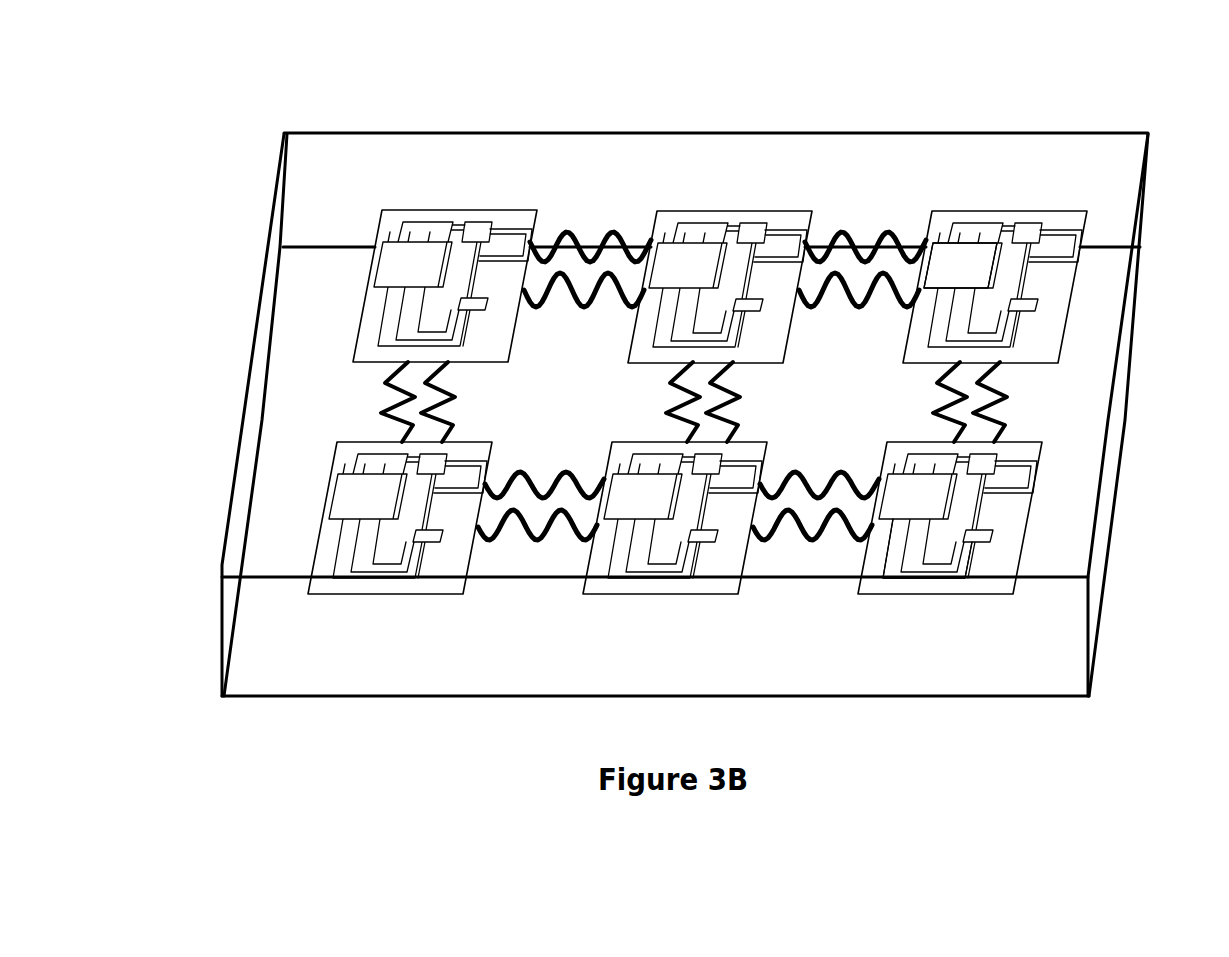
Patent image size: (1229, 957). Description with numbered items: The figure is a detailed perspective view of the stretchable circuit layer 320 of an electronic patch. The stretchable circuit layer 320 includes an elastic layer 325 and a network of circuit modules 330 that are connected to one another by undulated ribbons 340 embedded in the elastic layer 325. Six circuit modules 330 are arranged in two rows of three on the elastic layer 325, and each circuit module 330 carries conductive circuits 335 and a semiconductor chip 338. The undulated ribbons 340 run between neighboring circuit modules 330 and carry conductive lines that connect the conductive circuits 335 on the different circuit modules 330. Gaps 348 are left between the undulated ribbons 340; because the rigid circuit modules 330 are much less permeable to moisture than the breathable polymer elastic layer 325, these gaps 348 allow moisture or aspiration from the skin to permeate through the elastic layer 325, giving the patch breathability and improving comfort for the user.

The stretchable circuit layer 320 is at (970, 120).
The elastic layer 325 is at (632, 172).
The circuit module 330 is at (787, 222).
The conductive circuit 335 is at (918, 590).
The semiconductor chip 338 is at (950, 255).
The undulated ribbon 340 is at (1007, 397).
The gap 348 is at (538, 404).